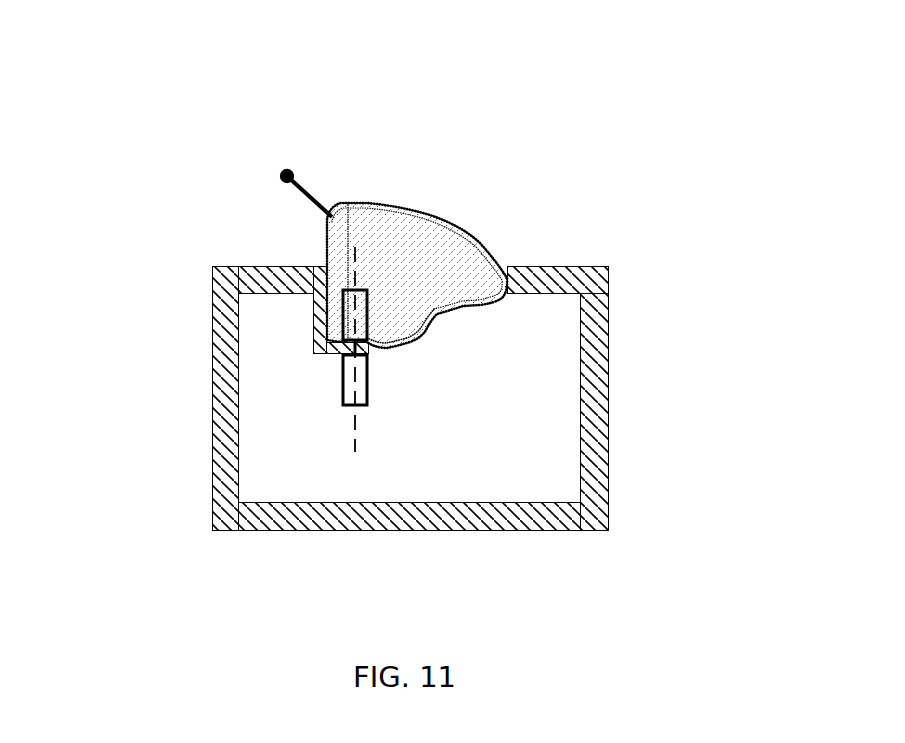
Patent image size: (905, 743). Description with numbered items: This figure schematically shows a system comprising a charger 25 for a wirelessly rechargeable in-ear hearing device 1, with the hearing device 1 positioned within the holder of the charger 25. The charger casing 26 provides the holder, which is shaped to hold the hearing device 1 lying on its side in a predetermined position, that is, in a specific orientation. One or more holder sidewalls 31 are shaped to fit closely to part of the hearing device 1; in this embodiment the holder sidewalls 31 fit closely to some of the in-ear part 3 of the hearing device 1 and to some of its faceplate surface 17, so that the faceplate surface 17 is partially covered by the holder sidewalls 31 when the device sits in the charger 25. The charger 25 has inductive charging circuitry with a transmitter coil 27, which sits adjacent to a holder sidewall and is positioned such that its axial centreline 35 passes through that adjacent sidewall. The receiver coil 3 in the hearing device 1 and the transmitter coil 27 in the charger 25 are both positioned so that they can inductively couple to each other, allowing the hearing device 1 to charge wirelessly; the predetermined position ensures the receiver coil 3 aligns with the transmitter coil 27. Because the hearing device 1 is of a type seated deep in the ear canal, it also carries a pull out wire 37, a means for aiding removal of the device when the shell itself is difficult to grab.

The in-ear hearing device 1 is at (468, 160).
The receiver coil 3 is at (462, 230).
The faceplate surface 17 is at (327, 253).
The charger 25 is at (222, 543).
The charger casing 26 is at (212, 347).
The transmitter coil 27 is at (345, 382).
The holder sidewalls 31 is at (435, 335).
The axial centreline 35 is at (360, 440).
The pull out wire 37 is at (312, 193).